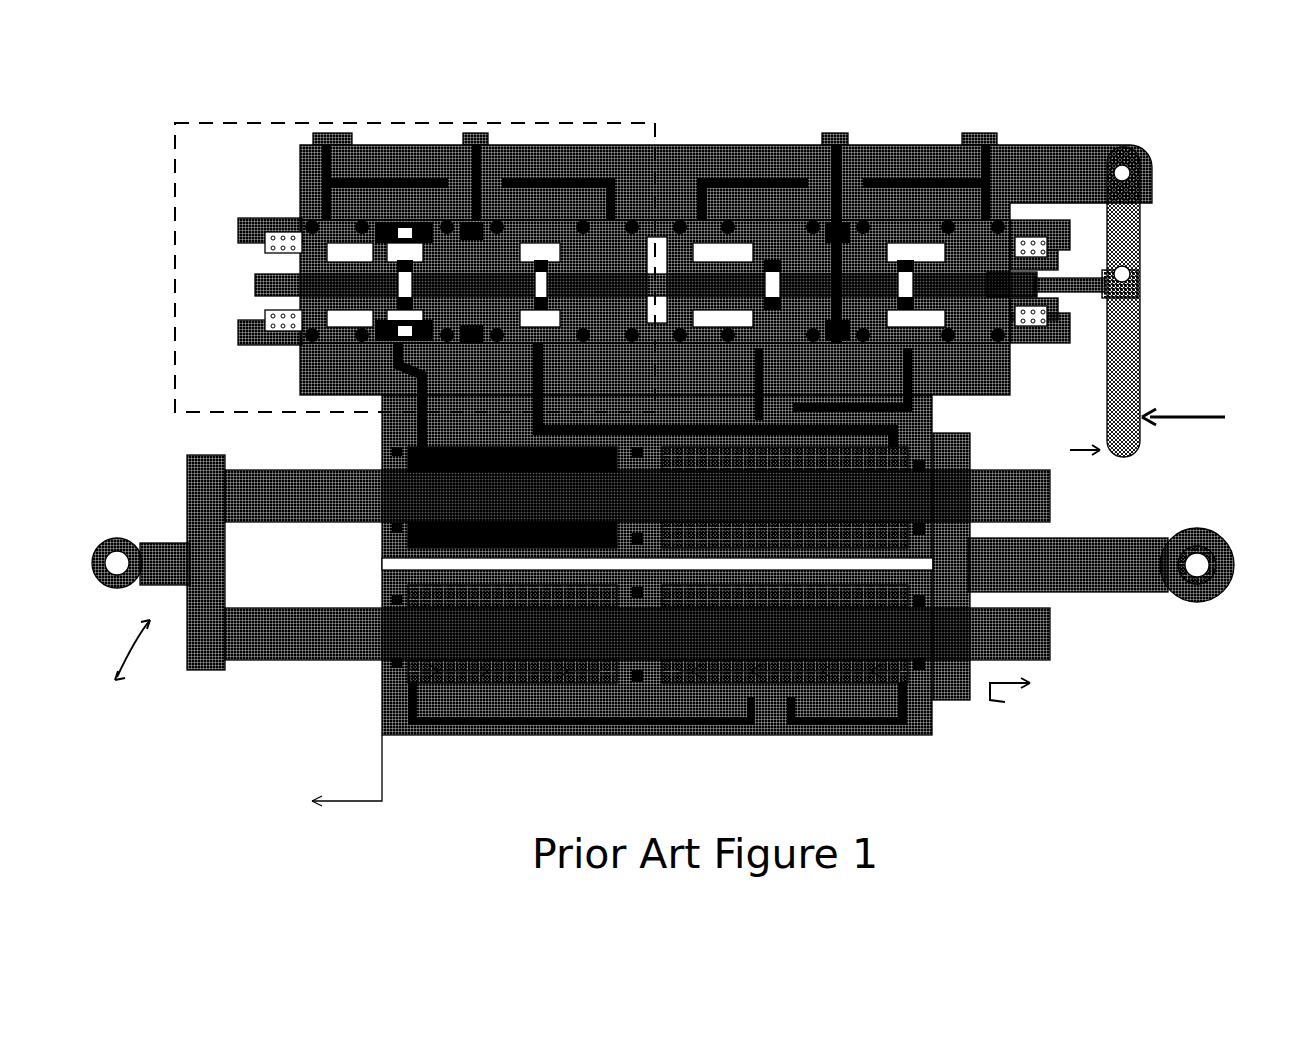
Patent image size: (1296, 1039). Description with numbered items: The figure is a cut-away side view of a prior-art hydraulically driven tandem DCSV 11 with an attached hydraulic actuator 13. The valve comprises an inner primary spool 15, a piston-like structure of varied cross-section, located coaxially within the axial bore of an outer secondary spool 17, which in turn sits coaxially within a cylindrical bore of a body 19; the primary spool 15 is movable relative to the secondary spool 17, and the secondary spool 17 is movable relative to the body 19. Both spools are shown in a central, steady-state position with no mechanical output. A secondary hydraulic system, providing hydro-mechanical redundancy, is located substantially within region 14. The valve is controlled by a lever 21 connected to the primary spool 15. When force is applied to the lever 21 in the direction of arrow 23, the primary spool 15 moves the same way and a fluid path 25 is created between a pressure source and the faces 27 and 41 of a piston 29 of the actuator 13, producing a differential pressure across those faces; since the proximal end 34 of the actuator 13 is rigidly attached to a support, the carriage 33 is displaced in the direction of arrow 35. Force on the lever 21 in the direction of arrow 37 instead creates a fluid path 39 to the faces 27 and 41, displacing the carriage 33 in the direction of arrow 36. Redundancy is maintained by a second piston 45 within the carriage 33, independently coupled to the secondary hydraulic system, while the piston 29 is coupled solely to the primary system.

The DCSV 11 is at (950, 105).
The hydraulic actuator 13 is at (545, 747).
The region 14 is at (232, 123).
The primary spool 15 is at (437, 282).
The secondary spool 17 is at (653, 400).
The body 19 is at (568, 165).
The lever 21 is at (1125, 347).
The arrow 23 is at (1183, 415).
The fluid path 25 is at (837, 145).
The face 27 is at (600, 677).
The piston 29 is at (763, 637).
The carriage 33 is at (380, 412).
The proximal end 34 is at (108, 663).
The arrow 35 is at (323, 782).
The arrow 36 is at (1023, 703).
The arrow 37 is at (1070, 450).
The fluid path 39 is at (863, 673).
The face 41 is at (682, 683).
The second piston 45 is at (457, 495).